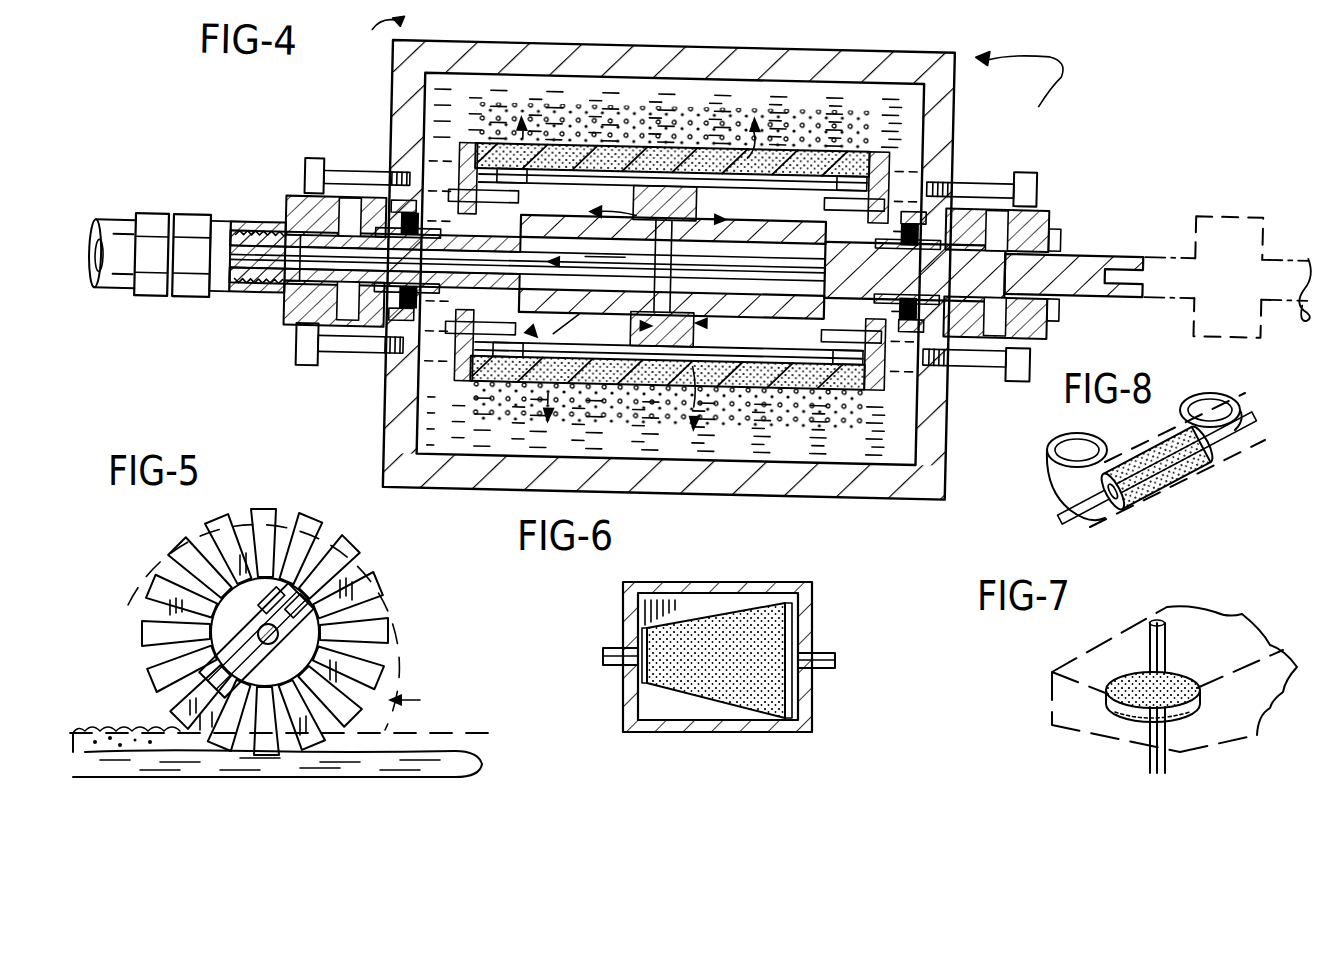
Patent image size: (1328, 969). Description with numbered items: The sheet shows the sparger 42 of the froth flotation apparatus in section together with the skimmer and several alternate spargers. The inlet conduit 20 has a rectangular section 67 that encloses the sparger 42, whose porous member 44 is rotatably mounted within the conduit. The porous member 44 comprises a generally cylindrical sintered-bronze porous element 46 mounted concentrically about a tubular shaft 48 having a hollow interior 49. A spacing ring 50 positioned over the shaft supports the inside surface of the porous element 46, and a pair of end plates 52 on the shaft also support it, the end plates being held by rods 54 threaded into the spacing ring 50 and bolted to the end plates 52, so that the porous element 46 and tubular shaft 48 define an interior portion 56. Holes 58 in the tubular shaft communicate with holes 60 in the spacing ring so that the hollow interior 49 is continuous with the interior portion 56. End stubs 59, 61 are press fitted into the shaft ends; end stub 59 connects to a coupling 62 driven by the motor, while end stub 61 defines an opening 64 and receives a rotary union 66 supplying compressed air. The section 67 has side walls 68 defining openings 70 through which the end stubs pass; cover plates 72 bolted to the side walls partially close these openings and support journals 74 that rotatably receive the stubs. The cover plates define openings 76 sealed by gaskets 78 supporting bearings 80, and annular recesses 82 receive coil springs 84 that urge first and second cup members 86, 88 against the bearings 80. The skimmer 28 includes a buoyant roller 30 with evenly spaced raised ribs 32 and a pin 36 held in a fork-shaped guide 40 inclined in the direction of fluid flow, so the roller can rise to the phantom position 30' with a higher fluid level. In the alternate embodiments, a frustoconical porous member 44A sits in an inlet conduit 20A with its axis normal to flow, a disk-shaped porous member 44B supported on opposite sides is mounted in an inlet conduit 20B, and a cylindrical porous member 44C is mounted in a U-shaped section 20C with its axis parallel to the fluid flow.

In FIG. 4, the inlet conduit 20 is at (960, 30).
In FIG. 4, the sparger 42 is at (1018, 90).
In FIG. 4, the porous member 44 is at (885, 400).
In FIG. 4, the porous element 46 is at (870, 400).
In FIG. 4, the tubular shaft 48 is at (705, 262).
In FIG. 4, the hollow interior 49 is at (600, 270).
In FIG. 4, the spacing ring 50 is at (672, 272).
In FIG. 4, the end plates 52 is at (880, 150).
In FIG. 4, the rods 54 is at (880, 240).
In FIG. 4, the interior portion 56 is at (555, 160).
In FIG. 4, the holes 58 is at (690, 250).
In FIG. 4, the end stub 59 is at (1098, 226).
In FIG. 4, the holes 60 is at (669, 266).
In FIG. 4, the end stub 61 is at (268, 282).
In FIG. 4, the coupling 62 is at (1278, 200).
In FIG. 4, the opening 64 is at (258, 228).
In FIG. 4, the rotary union 66 is at (200, 215).
In FIG. 4, the section 67 is at (377, 40).
In FIG. 4, the side walls 68 is at (948, 82).
In FIG. 4, the openings 70 is at (905, 190).
In FIG. 4, the cover plates 72 is at (978, 370).
In FIG. 4, the journals 74 is at (1060, 300).
In FIG. 4, the openings 76 is at (1066, 208).
In FIG. 4, the gaskets 78 is at (960, 350).
In FIG. 4, the bearings 80 is at (983, 90).
In FIG. 4, the annular recesses 82 is at (910, 236).
In FIG. 4, the coil springs 84 is at (925, 222).
In FIG. 4, the first cup member 86 is at (965, 225).
In FIG. 4, the second cup member 88 is at (1050, 232).
In FIG. 5, the skimmer 28 is at (423, 692).
In FIG. 5, the roller 30 is at (209, 632).
In FIG. 5, the displaced roller position 30' is at (284, 625).
In FIG. 5, the raised ribs 32 is at (340, 720).
In FIG. 5, the pin 36 is at (270, 560).
In FIG. 5, the guide 40 is at (245, 560).
In FIG. 6, the inlet conduit 20A is at (760, 580).
In FIG. 6, the porous member 44A is at (770, 630).
In FIG. 7, the inlet conduit 20B is at (1213, 720).
In FIG. 7, the porous member 44B is at (1125, 680).
In FIG. 8, the U-shaped section 20C is at (1220, 465).
In FIG. 8, the porous member 44C is at (1190, 485).